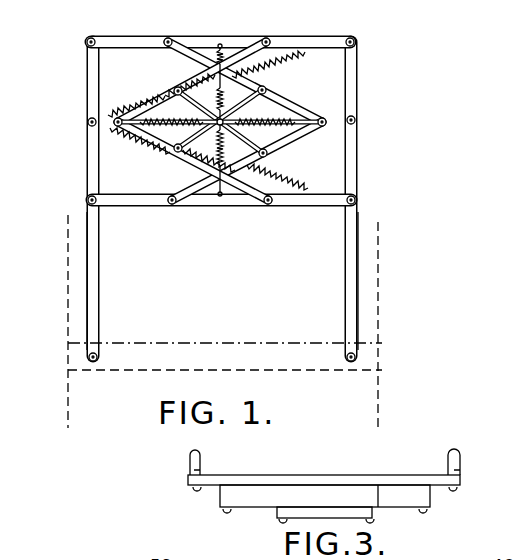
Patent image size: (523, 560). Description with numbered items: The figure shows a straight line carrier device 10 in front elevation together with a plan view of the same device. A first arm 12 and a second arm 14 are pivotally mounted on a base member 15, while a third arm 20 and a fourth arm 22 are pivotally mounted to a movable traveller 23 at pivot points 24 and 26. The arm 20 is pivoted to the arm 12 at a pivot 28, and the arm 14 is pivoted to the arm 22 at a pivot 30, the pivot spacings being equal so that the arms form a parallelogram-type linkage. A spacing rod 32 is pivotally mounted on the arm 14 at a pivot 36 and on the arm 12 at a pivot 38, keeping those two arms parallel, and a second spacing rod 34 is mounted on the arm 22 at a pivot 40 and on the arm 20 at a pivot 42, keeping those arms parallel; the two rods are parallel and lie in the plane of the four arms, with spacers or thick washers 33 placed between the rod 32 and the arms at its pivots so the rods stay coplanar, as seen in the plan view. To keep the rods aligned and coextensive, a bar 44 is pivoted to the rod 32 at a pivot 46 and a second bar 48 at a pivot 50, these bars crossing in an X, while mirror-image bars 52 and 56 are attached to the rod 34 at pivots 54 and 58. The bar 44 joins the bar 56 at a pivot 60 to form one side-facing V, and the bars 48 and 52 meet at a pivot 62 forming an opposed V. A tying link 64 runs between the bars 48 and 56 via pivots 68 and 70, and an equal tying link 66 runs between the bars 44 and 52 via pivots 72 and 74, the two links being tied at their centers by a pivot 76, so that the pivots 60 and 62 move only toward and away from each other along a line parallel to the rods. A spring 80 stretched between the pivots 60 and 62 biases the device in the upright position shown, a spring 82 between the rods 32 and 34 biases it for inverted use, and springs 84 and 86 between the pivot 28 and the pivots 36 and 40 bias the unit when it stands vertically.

In FIG. 1, the straight line carrier device 10 is at (68, 172).
In FIG. 1, the first arm 12 is at (86, 87).
In FIG. 3, the first arm 12 is at (190, 463).
In FIG. 1, the second arm 14 is at (358, 84).
In FIG. 3, the second arm 14 is at (458, 455).
In FIG. 1, the base member 15 is at (365, 307).
In FIG. 1, the third arm 20 is at (95, 272).
In FIG. 1, the fourth arm 22 is at (345, 278).
In FIG. 1, the traveller 23 is at (362, 398).
In FIG. 1, the pivot point 24 is at (90, 357).
In FIG. 1, the pivot point 26 is at (358, 354).
In FIG. 1, the pivot 28 is at (88, 122).
In FIG. 1, the pivot 30 is at (356, 120).
In FIG. 1, the spacing rod 32 is at (298, 38).
In FIG. 3, the spacing rod 32 is at (333, 480).
In FIG. 3, the spacers or thick washers 33 is at (200, 470).
In FIG. 1, the spacing rod 34 is at (238, 207).
In FIG. 1, the pivot 36 is at (352, 39).
In FIG. 1, the pivot 38 is at (85, 38).
In FIG. 1, the pivot 40 is at (356, 197).
In FIG. 1, the pivot 42 is at (88, 201).
In FIG. 1, the bar 44 is at (235, 53).
In FIG. 1, the pivot 46 is at (268, 39).
In FIG. 1, the second bar 48 is at (214, 47).
In FIG. 1, the pivot 50 is at (168, 38).
In FIG. 1, the bar 52 is at (303, 133).
In FIG. 1, the pivot 54 is at (270, 205).
In FIG. 1, the bar 56 is at (155, 145).
In FIG. 1, the pivot 58 is at (169, 205).
In FIG. 1, the pivot 60 is at (110, 110).
In FIG. 1, the pivot 62 is at (330, 118).
In FIG. 1, the tying link 64 is at (282, 145).
In FIG. 1, the tying link 66 is at (278, 110).
In FIG. 3, the tying link 66 is at (375, 514).
In FIG. 1, the pivot 68 is at (264, 93).
In FIG. 1, the pivot 70 is at (178, 150).
In FIG. 1, the pivot 72 is at (167, 84).
In FIG. 1, the pivot 74 is at (265, 155).
In FIG. 1, the pivot 76 is at (190, 80).
In FIG. 1, the spring 80 is at (140, 140).
In FIG. 1, the spring 82 is at (200, 165).
In FIG. 1, the spring 84 is at (300, 56).
In FIG. 1, the spring 86 is at (292, 182).